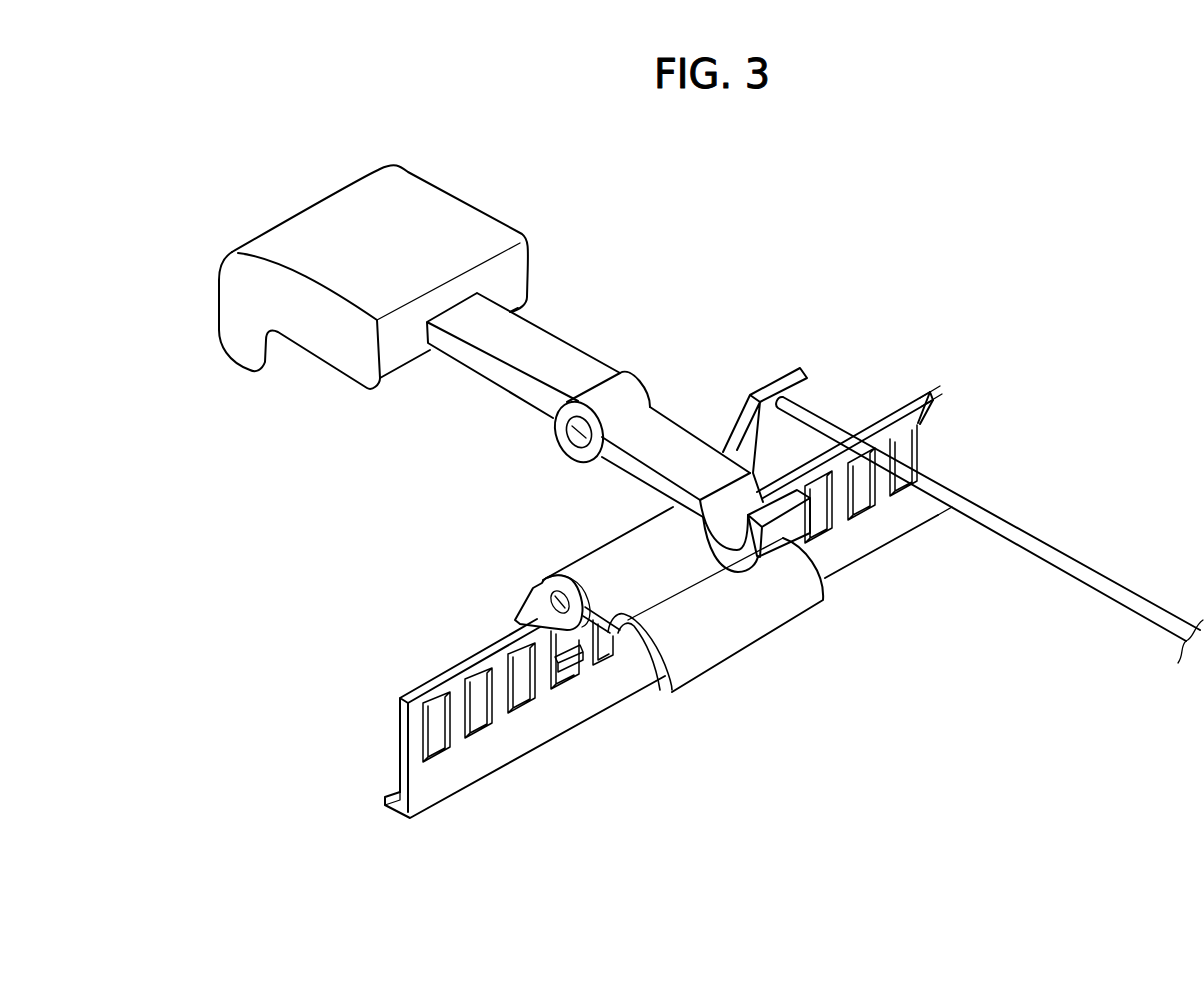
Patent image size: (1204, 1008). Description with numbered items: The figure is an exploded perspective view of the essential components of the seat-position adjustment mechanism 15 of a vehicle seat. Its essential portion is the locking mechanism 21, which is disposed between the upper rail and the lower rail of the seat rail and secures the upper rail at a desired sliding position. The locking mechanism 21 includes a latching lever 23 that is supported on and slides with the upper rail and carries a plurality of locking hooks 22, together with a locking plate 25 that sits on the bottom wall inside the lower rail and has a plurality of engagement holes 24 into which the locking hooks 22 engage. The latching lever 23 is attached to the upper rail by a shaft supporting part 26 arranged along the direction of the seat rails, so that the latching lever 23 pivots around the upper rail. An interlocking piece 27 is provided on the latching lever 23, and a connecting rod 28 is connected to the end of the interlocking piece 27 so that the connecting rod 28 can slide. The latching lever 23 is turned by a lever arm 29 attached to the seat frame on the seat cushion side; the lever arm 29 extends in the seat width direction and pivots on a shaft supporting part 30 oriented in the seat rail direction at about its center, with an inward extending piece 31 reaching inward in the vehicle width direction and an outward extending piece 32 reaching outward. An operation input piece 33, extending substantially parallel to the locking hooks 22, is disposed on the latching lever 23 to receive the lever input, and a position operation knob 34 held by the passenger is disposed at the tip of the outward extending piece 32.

The seat-position adjustment mechanism 15 is at (940, 296).
The locking mechanism 21 is at (700, 629).
The locking hooks 22 is at (605, 645).
The latching lever 23 is at (611, 536).
The engagement holes 24 is at (600, 657).
The locking plate 25 is at (657, 646).
The shaft supporting part 26 is at (550, 607).
The interlocking piece 27 is at (800, 392).
The connecting rod 28 is at (997, 520).
The lever arm 29 is at (608, 396).
The shaft supporting part 30 is at (578, 436).
The inward extending piece 31 is at (690, 437).
The outward extending piece 32 is at (555, 350).
The operation input piece 33 is at (732, 612).
The position operation knob 34 is at (323, 208).